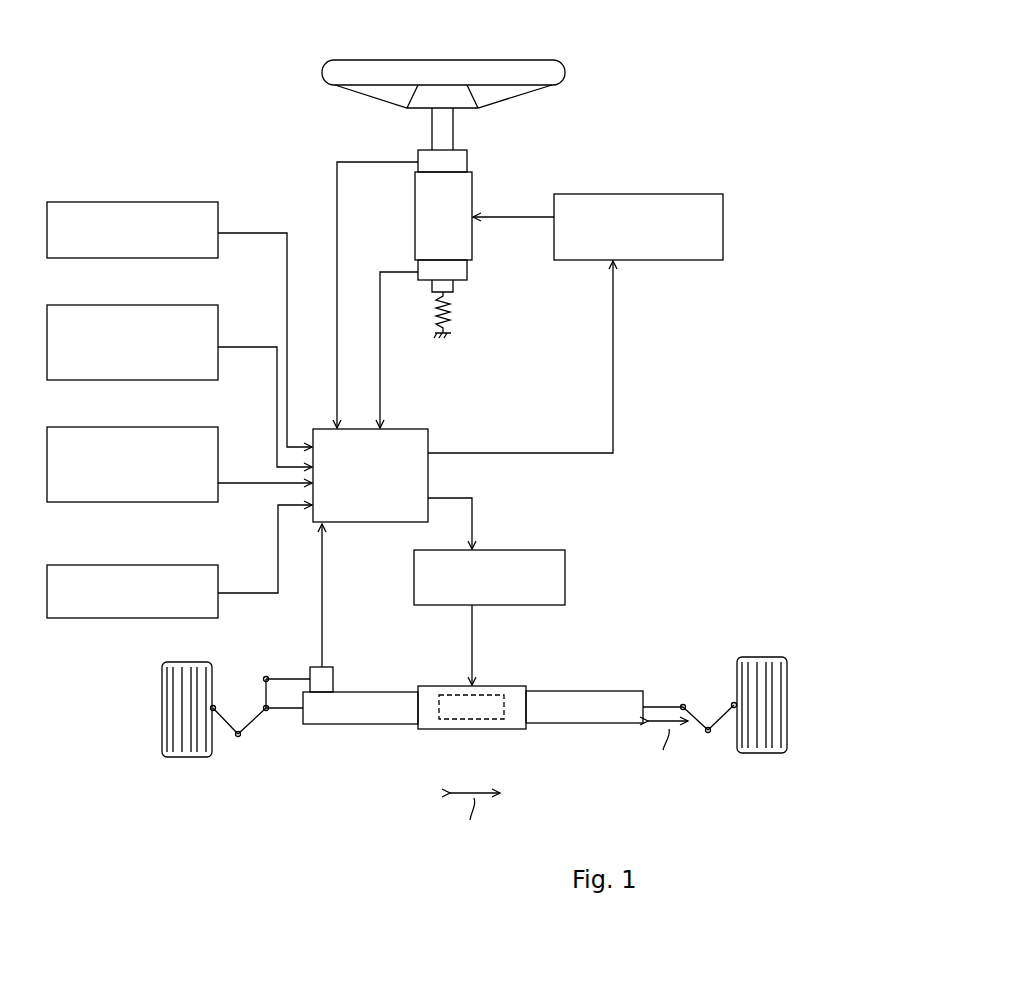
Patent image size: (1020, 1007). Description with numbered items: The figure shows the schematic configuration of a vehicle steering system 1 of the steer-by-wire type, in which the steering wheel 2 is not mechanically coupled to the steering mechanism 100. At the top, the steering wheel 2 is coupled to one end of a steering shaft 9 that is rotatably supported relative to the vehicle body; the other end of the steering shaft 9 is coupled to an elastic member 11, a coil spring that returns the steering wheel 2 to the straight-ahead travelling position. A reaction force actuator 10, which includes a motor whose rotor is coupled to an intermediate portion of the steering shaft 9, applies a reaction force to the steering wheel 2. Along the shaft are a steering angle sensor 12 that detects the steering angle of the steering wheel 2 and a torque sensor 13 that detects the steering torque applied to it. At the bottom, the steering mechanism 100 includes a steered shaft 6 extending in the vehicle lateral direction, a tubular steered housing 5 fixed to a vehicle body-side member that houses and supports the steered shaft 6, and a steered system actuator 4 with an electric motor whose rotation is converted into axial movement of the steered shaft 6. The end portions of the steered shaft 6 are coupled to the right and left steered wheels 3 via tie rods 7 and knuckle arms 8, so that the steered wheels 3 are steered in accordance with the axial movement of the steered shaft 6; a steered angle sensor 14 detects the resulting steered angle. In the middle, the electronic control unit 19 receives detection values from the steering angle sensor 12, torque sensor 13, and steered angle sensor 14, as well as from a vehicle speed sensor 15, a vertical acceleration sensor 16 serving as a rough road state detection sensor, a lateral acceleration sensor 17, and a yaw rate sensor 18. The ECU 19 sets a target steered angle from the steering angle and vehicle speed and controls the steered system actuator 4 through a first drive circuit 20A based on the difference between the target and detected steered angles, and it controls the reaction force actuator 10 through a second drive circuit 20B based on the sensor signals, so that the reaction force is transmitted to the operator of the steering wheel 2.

The vehicle steering system 1 is at (605, 140).
The steering wheel 2 is at (520, 60).
The steered wheels 3 is at (187, 758).
The steered system actuator 4 is at (472, 719).
The steered housing 5 is at (388, 725).
The steered shaft 6 is at (289, 712).
The tie rods 7 is at (252, 728).
The knuckle arms 8 is at (228, 720).
The steering shaft 9 is at (455, 129).
The reaction force actuator 10 is at (462, 187).
The elastic member 11 is at (455, 312).
The steering angle sensor 12 is at (468, 155).
The torque sensor 13 is at (465, 270).
The steered angle sensor 14 is at (313, 666).
The vehicle speed sensor 15 is at (168, 202).
The vertical acceleration sensor 16 is at (168, 305).
The lateral acceleration sensor 17 is at (168, 427).
The yaw rate sensor 18 is at (168, 565).
The electronic control unit (ECU) 19 is at (413, 428).
The first drive circuit 20A is at (565, 568).
The second drive circuit 20B is at (723, 213).
The steering mechanism 100 is at (694, 660).